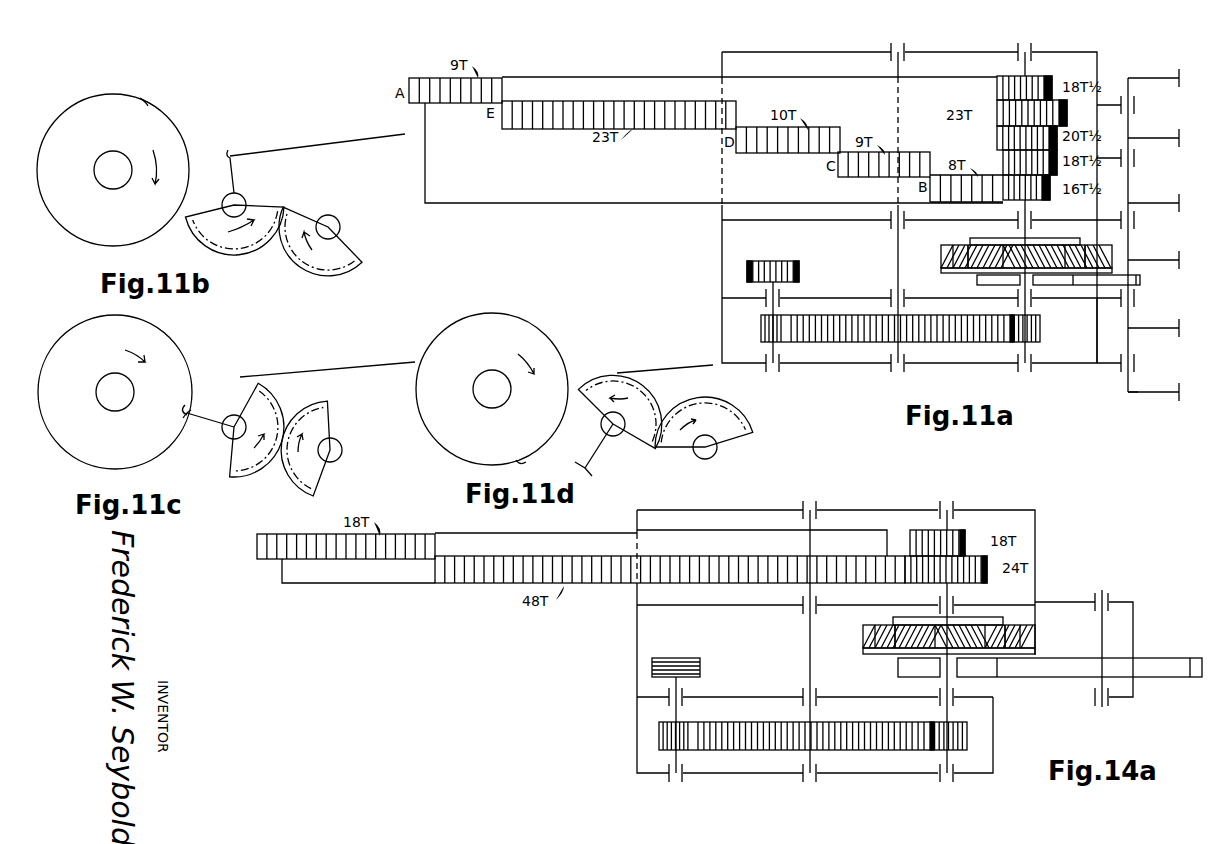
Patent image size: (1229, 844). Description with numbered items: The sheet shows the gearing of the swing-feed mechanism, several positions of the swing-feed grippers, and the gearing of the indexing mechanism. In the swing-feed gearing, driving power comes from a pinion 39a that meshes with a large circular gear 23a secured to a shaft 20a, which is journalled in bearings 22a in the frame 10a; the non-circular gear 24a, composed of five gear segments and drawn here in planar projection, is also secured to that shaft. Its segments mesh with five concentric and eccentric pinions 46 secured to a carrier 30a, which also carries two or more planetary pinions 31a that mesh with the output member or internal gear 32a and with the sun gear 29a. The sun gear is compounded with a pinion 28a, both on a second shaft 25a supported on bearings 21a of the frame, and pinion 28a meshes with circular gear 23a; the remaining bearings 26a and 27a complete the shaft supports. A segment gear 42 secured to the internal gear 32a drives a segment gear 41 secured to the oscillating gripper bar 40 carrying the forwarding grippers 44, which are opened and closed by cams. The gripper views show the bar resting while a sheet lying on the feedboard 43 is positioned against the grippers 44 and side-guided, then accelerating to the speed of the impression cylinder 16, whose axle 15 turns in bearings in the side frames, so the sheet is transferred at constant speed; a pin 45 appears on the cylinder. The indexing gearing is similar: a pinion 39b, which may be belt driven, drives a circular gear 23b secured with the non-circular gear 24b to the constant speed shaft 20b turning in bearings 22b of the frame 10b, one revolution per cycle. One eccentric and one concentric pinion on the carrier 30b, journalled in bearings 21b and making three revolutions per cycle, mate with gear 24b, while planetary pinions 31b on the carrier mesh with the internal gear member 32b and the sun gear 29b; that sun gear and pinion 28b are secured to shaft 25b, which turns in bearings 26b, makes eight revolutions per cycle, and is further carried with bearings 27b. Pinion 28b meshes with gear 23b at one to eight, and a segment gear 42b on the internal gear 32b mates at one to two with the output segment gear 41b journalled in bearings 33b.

In FIG. 11a, the frame 10a is at (817, 53).
In FIG. 11a, the shaft 20a is at (898, 76).
In FIG. 11a, the bearings 21a is at (1033, 49).
In FIG. 11a, the bearings 22a is at (905, 50).
In FIG. 11a, the circular gear 23a is at (848, 342).
In FIG. 11a, the non-circular gear 24a is at (661, 76).
In FIG. 11a, the second shaft 25a is at (1033, 347).
In FIG. 11a, the clutch 26a is at (1039, 300).
In FIG. 11a, the clutch 27a is at (782, 296).
In FIG. 11a, the pinion 28a is at (1040, 326).
In FIG. 11a, the sun gear 29a is at (980, 244).
In FIG. 11a, the carrier 30a is at (1065, 238).
In FIG. 11a, the planetary pinions 31a is at (941, 249).
In FIG. 11a, the internal gear 32a is at (941, 268).
In FIG. 11a, the pinion 39a is at (763, 329).
In FIG. 11a, the pinions 46 is at (987, 139).
In FIG. 14a, the frame 10b is at (748, 510).
In FIG. 14a, the constant speed shaft 20b is at (810, 644).
In FIG. 14a, the bearings 21b is at (956, 507).
In FIG. 14a, the bearings 22b is at (812, 507).
In FIG. 14a, the circular gear 23b is at (776, 748).
In FIG. 14a, the non-circular gear 24b is at (598, 533).
In FIG. 14a, the shaft 25b is at (944, 711).
In FIG. 14a, the bearings 26b is at (956, 697).
In FIG. 14a, the clutch 27b is at (687, 695).
In FIG. 14a, the pinion 28b is at (967, 736).
In FIG. 14a, the sun gear 29b is at (938, 625).
In FIG. 14a, the carrier 30b is at (1000, 622).
In FIG. 14a, the planetary pinions 31b is at (874, 626).
In FIG. 14a, the internal gear member 32b is at (870, 649).
In FIG. 14a, the bearings 33b is at (1113, 598).
In FIG. 14a, the pinion 39b is at (659, 740).
In FIG. 14a, the output segment gear 41b is at (1190, 678).
In FIG. 14a, the segment gear 42b is at (898, 671).
In FIG. 11b, the axle 15 is at (122, 186).
In FIG. 11c, the axle 15 is at (96, 380).
In FIG. 11d, the axle 15 is at (474, 374).
In FIG. 11b, the impression cylinder 16 is at (86, 98).
In FIG. 11c, the impression cylinder 16 is at (80, 321).
In FIG. 11d, the impression cylinder 16 is at (553, 344).
In FIG. 11a, the gripper bar 40 is at (1172, 392).
In FIG. 11b, the gripper bar 40 is at (244, 194).
In FIG. 11c, the gripper bar 40 is at (224, 437).
In FIG. 11d, the gripper bar 40 is at (601, 447).
In FIG. 11a, the segment gear 41 is at (1140, 281).
In FIG. 11b, the segment gear 41 is at (256, 250).
In FIG. 11c, the segment gear 41 is at (230, 464).
In FIG. 11d, the segment gear 41 is at (648, 408).
In FIG. 11a, the segment gear 42 is at (978, 282).
In FIG. 11b, the segment gear 42 is at (345, 275).
In FIG. 11c, the segment gear 42 is at (315, 478).
In FIG. 11d, the segment gear 42 is at (735, 432).
In FIG. 11b, the feedboard 43 is at (350, 140).
In FIG. 11c, the feedboard 43 is at (310, 370).
In FIG. 11d, the feedboard 43 is at (660, 367).
In FIG. 11a, the grippers 44 is at (1182, 140).
In FIG. 11b, the grippers 44 is at (228, 153).
In FIG. 11c, the grippers 44 is at (184, 407).
In FIG. 11d, the grippers 44 is at (594, 460).
In FIG. 11b, the pin 45 is at (146, 98).
In FIG. 11c, the pin 45 is at (182, 416).
In FIG. 11d, the pin 45 is at (519, 452).